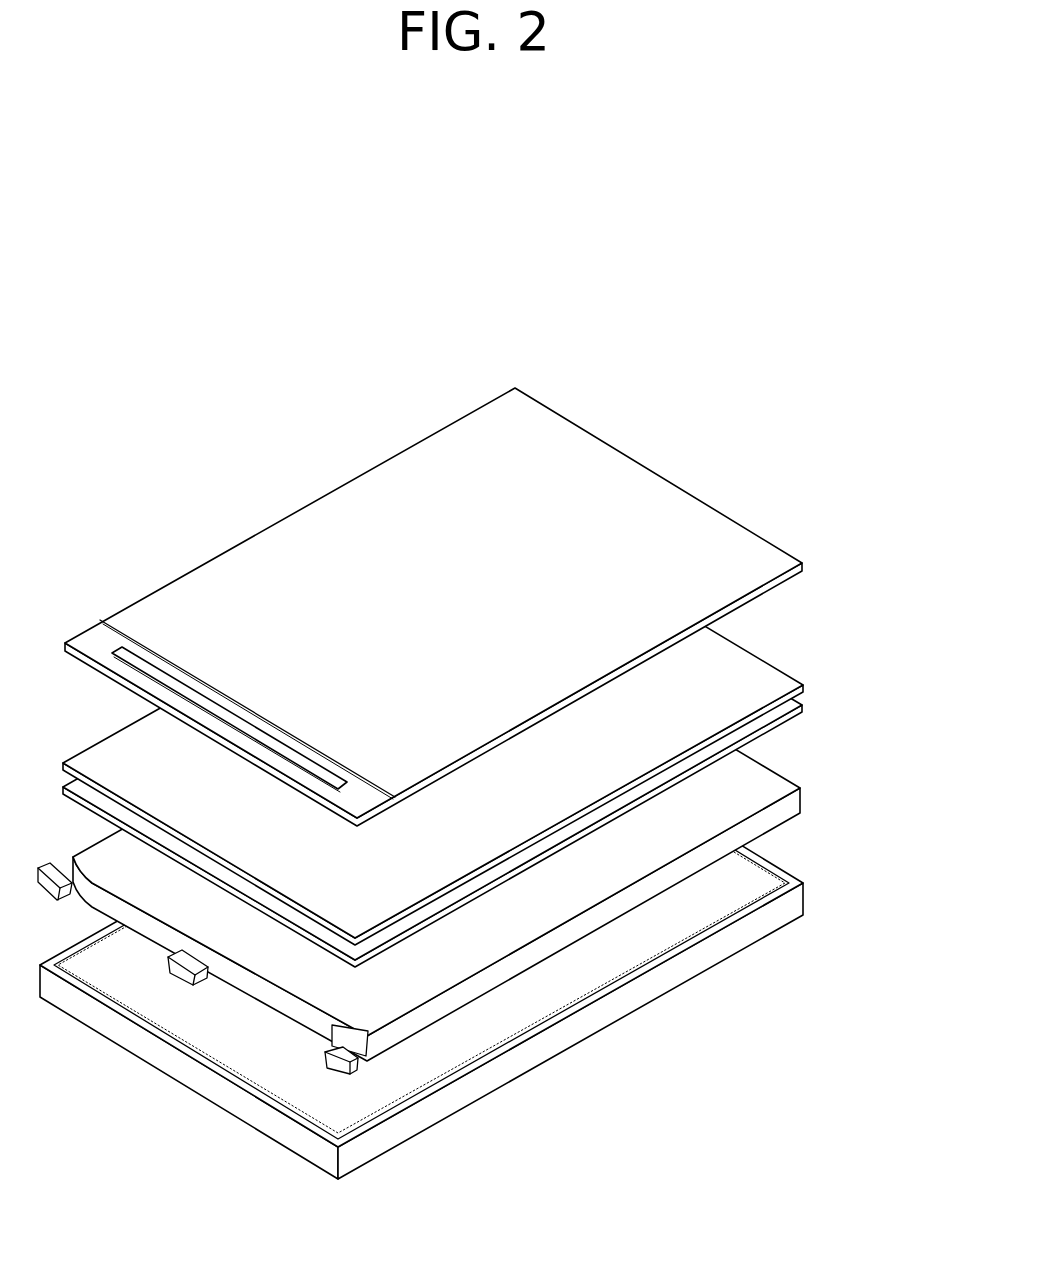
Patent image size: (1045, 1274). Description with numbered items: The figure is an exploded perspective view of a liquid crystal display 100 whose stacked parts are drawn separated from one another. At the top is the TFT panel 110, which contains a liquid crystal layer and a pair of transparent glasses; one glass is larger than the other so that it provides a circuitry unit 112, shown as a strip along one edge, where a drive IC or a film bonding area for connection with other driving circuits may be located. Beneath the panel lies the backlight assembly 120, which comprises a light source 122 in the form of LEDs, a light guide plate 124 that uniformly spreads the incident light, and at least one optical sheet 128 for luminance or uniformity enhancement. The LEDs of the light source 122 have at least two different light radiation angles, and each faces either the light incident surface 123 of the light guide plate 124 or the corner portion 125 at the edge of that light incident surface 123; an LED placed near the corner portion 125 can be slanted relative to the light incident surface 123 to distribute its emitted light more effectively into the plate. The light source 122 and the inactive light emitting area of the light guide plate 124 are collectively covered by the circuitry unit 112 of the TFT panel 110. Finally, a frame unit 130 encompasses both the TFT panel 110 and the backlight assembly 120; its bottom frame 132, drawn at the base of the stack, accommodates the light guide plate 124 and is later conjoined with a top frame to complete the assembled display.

The liquid crystal display 100 is at (477, 778).
The TFT panel 110 is at (415, 607).
The circuitry unit 112 is at (92, 647).
The backlight assembly 120 is at (482, 827).
The light source 122 is at (365, 1063).
The light incident surface 123 is at (247, 987).
The light guide plate 124 is at (487, 878).
The corner portion 125 is at (357, 1013).
The optical sheet 128 is at (768, 675).
The frame unit 130 is at (483, 940).
The bottom frame 132 is at (630, 1003).